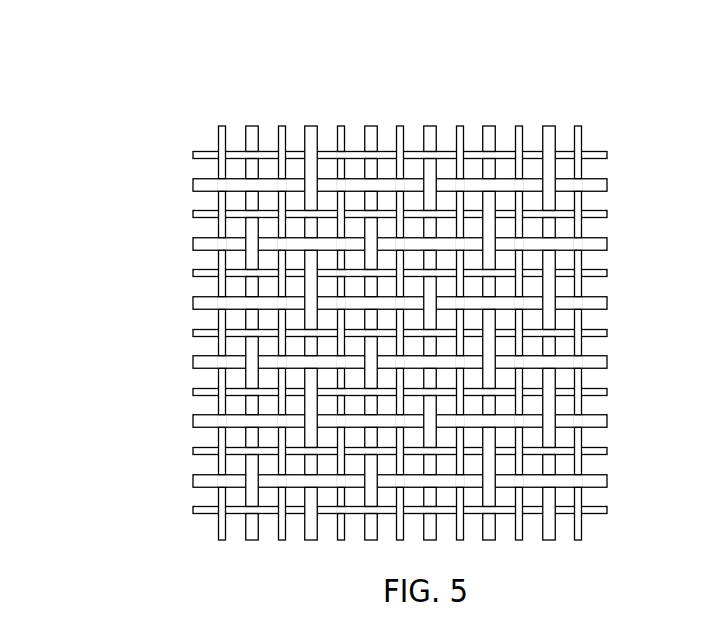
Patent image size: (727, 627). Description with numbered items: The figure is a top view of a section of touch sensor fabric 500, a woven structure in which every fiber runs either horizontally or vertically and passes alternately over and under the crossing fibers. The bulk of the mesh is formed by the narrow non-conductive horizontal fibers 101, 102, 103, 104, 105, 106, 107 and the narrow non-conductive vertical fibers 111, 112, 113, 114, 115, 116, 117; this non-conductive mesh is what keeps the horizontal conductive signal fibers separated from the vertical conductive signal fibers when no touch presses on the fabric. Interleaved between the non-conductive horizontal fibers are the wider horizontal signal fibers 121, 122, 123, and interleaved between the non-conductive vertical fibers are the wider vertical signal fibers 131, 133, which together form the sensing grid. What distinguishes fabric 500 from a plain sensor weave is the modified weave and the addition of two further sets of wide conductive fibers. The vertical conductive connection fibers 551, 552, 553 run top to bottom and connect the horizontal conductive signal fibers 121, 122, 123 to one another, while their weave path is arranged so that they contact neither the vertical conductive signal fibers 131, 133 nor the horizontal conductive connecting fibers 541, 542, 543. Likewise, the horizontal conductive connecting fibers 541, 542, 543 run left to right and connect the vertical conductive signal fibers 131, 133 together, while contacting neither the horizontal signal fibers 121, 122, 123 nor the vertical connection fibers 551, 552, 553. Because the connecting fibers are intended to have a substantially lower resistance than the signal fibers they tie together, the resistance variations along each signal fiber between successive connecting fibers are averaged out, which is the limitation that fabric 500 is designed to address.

The non-conductive horizontal fiber 101 is at (608, 152).
The non-conductive horizontal fiber 102 is at (608, 212).
The non-conductive horizontal fiber 103 is at (608, 270).
The non-conductive horizontal fiber 104 is at (608, 330).
The non-conductive horizontal fiber 105 is at (608, 390).
The non-conductive horizontal fiber 106 is at (608, 448).
The non-conductive horizontal fiber 107 is at (608, 508).
The non-conductive vertical fiber 111 is at (578, 125).
The non-conductive vertical fiber 112 is at (519, 125).
The non-conductive vertical fiber 113 is at (460, 125).
The non-conductive vertical fiber 114 is at (401, 125).
The non-conductive vertical fiber 115 is at (341, 125).
The non-conductive vertical fiber 116 is at (282, 125).
The non-conductive vertical fiber 117 is at (222, 125).
The horizontal signal fiber 121 is at (608, 239).
The horizontal signal fiber 122 is at (608, 357).
The horizontal signal fiber 123 is at (608, 476).
The vertical signal fiber 131 is at (430, 125).
The vertical signal fiber 133 is at (311, 125).
The horizontal conductive connecting fiber 541 is at (608, 180).
The horizontal conductive connecting fiber 542 is at (608, 298).
The horizontal conductive connecting fiber 543 is at (608, 416).
The vertical conductive connection fiber 551 is at (489, 125).
The vertical conductive connection fiber 552 is at (371, 125).
The vertical conductive connection fiber 553 is at (252, 125).
The fabric 500 is at (687, 571).